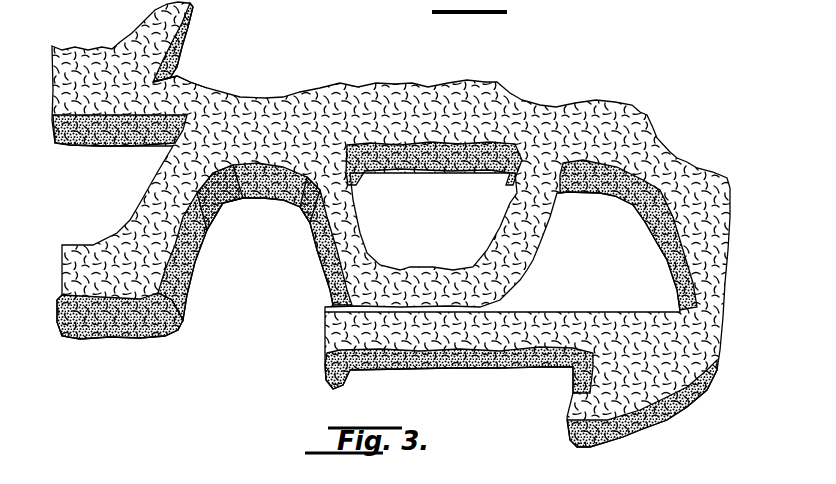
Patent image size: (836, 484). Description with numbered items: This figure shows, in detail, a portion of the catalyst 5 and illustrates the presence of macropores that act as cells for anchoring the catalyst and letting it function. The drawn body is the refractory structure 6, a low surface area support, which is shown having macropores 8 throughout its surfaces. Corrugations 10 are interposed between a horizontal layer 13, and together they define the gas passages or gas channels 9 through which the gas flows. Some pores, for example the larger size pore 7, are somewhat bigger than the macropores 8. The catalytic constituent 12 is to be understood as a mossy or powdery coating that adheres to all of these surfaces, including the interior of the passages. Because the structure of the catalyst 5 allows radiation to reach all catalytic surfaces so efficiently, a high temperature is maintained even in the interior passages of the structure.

The catalyst 5 is at (133, 330).
The refractory structure 6 is at (188, 285).
The larger size pore 7 is at (205, 102).
The macropores 8 is at (315, 200).
The gas passages 9 is at (613, 220).
The corrugations 10 is at (263, 200).
The catalytic constituent 12 is at (130, 218).
The horizontal layer 13 is at (300, 98).